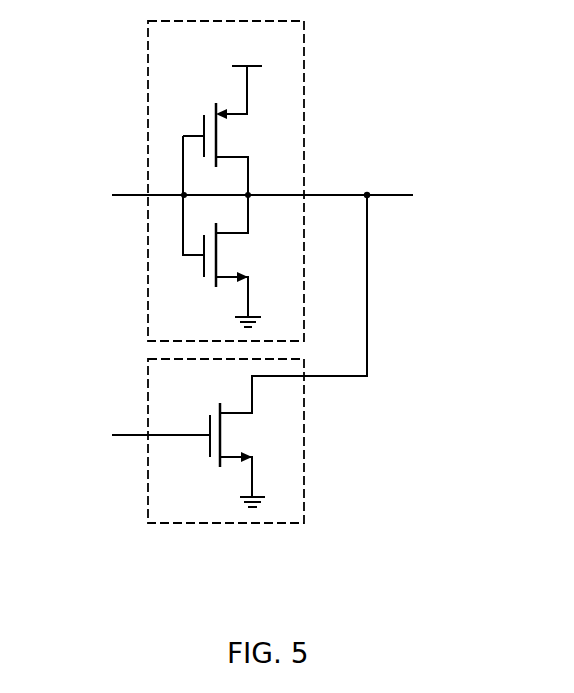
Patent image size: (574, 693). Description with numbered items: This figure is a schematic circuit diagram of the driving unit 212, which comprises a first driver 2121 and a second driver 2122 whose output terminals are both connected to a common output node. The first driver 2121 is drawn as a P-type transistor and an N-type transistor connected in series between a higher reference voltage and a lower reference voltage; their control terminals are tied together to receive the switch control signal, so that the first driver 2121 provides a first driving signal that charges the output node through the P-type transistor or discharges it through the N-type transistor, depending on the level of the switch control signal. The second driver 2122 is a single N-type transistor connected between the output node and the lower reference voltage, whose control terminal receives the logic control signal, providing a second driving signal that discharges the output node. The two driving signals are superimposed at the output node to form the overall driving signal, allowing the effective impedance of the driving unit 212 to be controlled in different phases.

The driving unit 212 is at (265, 295).
The first driver 2121 is at (304, 70).
The second driver 2122 is at (304, 478).